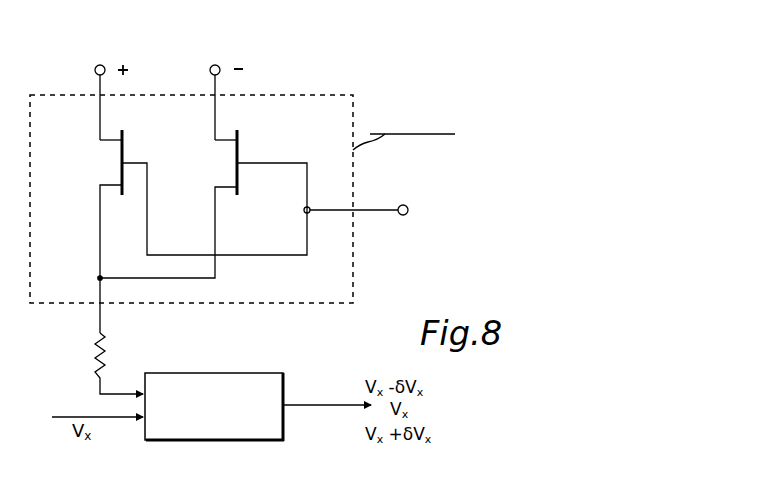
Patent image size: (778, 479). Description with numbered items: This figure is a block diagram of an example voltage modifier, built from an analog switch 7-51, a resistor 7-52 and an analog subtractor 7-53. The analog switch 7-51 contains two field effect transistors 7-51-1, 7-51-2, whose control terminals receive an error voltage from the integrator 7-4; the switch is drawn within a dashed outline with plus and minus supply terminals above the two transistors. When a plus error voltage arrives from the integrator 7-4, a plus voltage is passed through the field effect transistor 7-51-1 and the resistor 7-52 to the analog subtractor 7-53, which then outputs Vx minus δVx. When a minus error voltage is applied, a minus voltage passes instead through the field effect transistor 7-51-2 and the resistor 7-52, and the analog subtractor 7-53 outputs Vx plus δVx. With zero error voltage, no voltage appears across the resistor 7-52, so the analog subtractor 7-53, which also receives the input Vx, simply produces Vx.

The analog switch 7-51 is at (312, 83).
The field effect transistor 7-51-1 is at (126, 150).
The field effect transistor 7-51-2 is at (250, 144).
The resistor 7-52 is at (95, 356).
The analog subtractor 7-53 is at (246, 363).
The integrator 7-4 is at (431, 221).